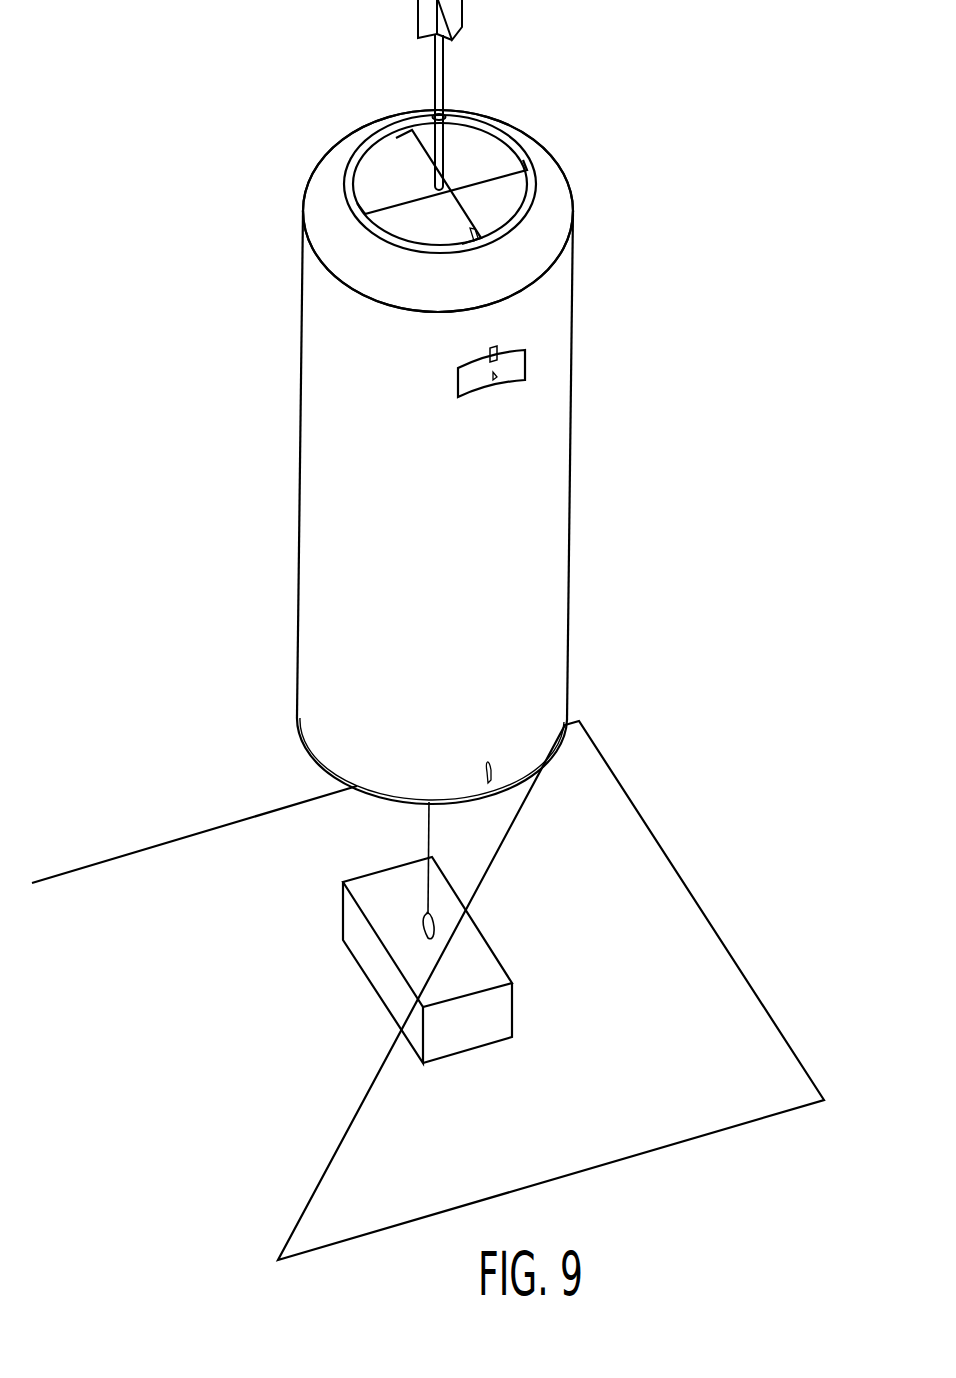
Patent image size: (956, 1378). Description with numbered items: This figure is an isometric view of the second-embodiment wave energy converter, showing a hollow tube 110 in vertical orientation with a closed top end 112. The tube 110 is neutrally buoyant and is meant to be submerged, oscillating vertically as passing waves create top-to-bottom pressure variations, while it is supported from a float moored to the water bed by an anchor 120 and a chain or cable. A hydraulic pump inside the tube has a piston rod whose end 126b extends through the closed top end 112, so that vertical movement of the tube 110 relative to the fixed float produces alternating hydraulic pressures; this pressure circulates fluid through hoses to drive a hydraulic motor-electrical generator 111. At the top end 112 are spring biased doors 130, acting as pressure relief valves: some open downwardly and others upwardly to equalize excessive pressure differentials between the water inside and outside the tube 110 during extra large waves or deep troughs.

The hollow tube 110 is at (340, 610).
The hydraulic motor-electrical generator 111 is at (517, 363).
The closed top end 112 is at (322, 215).
The anchor 120 is at (473, 973).
The piston rod end 126b is at (420, 112).
The spring biased doors 130 is at (382, 180).